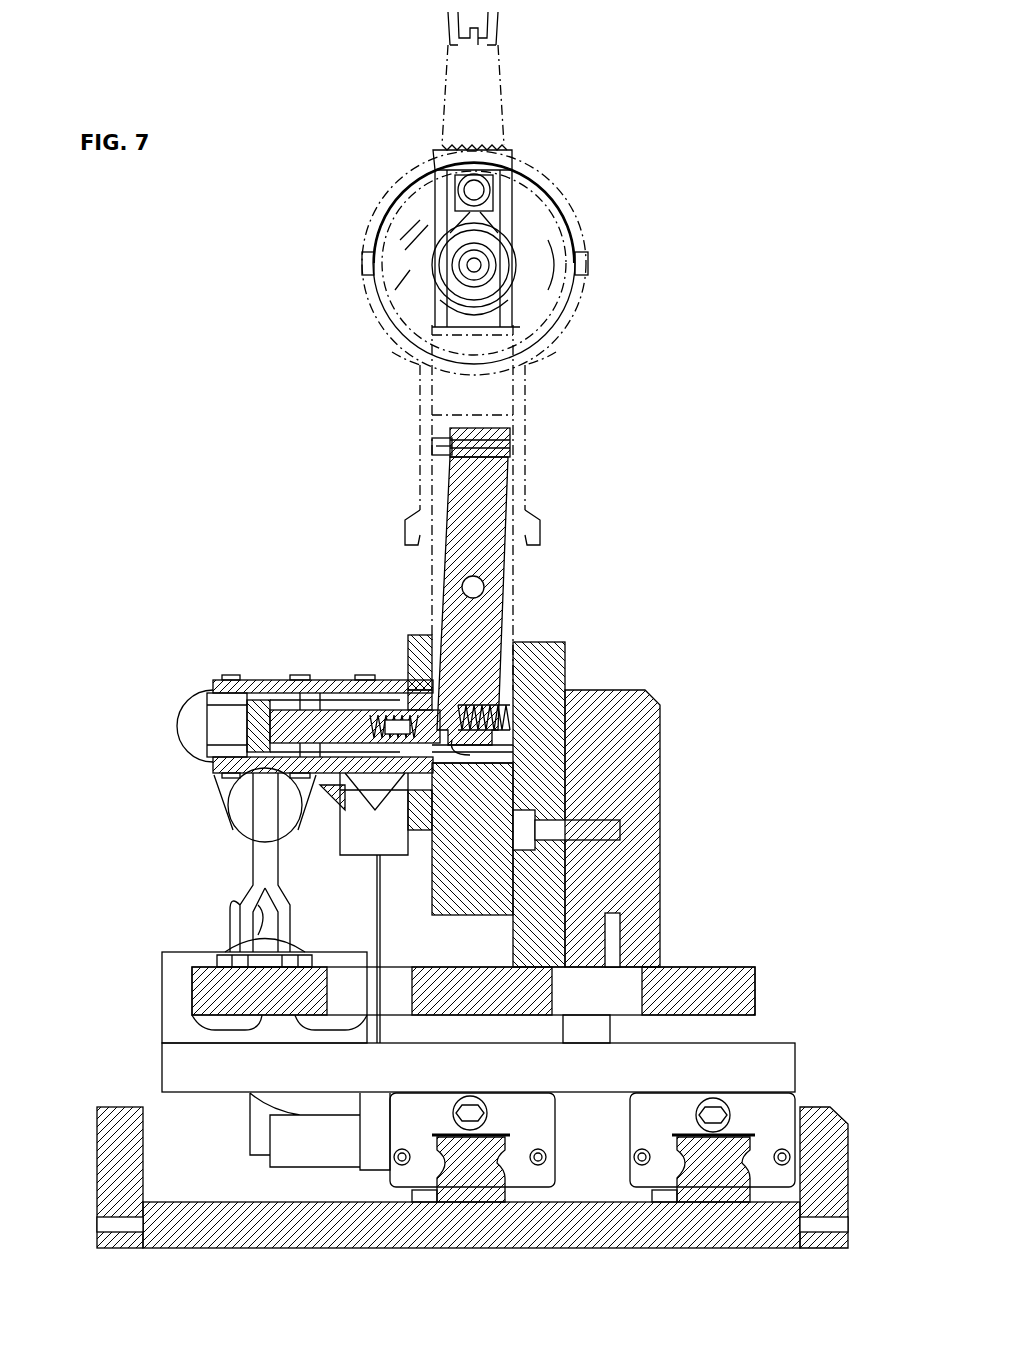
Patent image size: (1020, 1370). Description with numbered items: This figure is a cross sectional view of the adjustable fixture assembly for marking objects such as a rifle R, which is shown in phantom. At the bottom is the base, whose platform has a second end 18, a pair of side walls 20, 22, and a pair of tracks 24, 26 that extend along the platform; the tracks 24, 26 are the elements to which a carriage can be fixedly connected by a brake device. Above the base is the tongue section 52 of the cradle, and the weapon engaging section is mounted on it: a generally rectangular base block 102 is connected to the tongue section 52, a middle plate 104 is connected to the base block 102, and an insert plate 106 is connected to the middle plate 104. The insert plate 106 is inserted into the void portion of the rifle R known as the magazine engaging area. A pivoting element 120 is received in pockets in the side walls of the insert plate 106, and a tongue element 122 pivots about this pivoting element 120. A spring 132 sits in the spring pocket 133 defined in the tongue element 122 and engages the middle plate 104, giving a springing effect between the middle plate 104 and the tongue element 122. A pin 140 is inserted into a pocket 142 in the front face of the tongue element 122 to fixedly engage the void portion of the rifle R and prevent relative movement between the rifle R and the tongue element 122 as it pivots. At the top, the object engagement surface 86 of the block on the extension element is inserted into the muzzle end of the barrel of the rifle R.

The rifle R is at (555, 178).
The object engagement surface 86 is at (468, 268).
The pocket 142 is at (468, 428).
The pin 140 is at (440, 445).
The tongue element 122 is at (473, 535).
The pivoting element 120 is at (480, 587).
The spring 132 is at (512, 700).
The middle plate 104 is at (555, 652).
The base block 102 is at (662, 830).
The insert plate 106 is at (432, 890).
The spring pocket 133 is at (470, 755).
The tongue section 52 is at (715, 967).
The second end 18 is at (570, 1248).
The side wall 20 is at (97, 1165).
The side wall 22 is at (848, 1168).
The track 24 is at (470, 1202).
The track 26 is at (710, 1202).